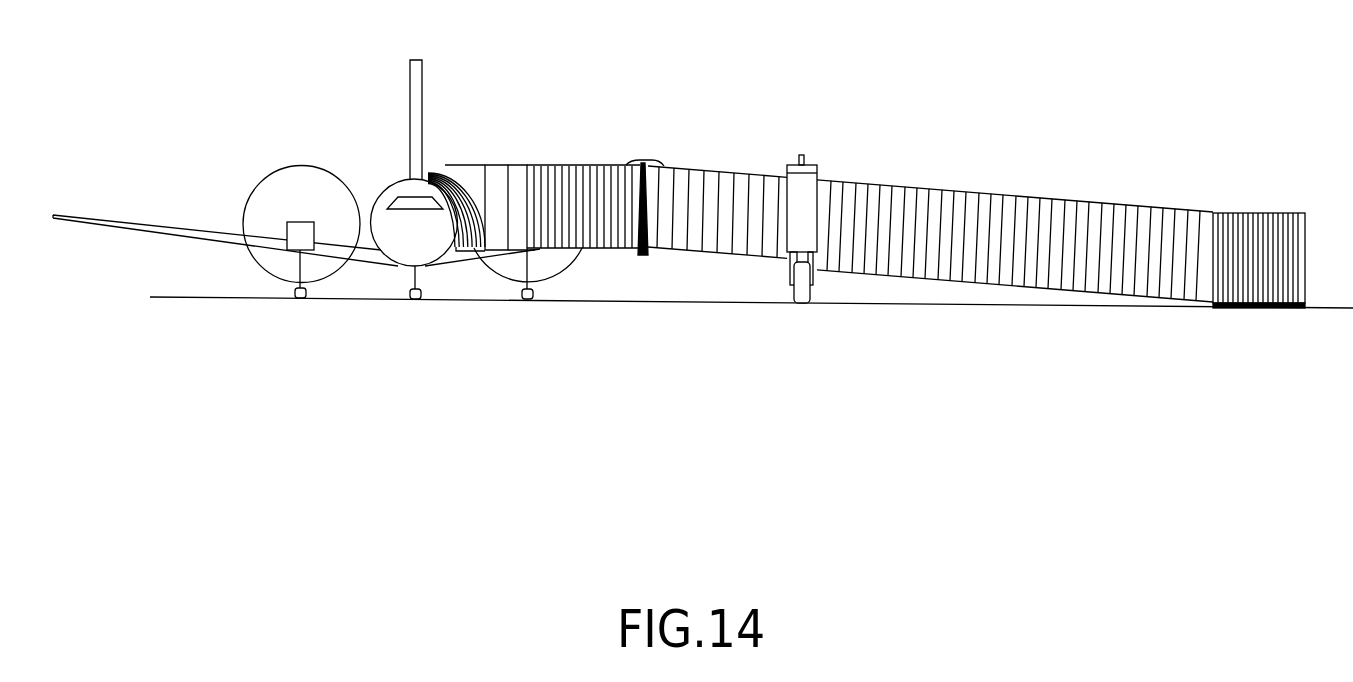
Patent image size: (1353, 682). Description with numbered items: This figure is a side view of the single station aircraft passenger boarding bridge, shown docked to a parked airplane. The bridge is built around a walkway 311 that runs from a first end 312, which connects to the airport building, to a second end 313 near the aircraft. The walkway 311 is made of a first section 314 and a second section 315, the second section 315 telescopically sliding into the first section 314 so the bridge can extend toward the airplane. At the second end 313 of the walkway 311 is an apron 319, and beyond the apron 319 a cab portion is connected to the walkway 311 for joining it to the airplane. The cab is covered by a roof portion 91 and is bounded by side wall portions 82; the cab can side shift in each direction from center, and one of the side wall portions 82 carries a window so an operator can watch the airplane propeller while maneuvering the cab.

The roof portion 91 is at (445, 166).
The side wall portions 82 is at (500, 175).
The second end of walkway 313 is at (518, 173).
The apron 319 is at (523, 165).
The second section of walkway 315 is at (717, 180).
The walkway 311 is at (1062, 190).
The first section of walkway 314 is at (1142, 237).
The first end of walkway 312 is at (1223, 212).